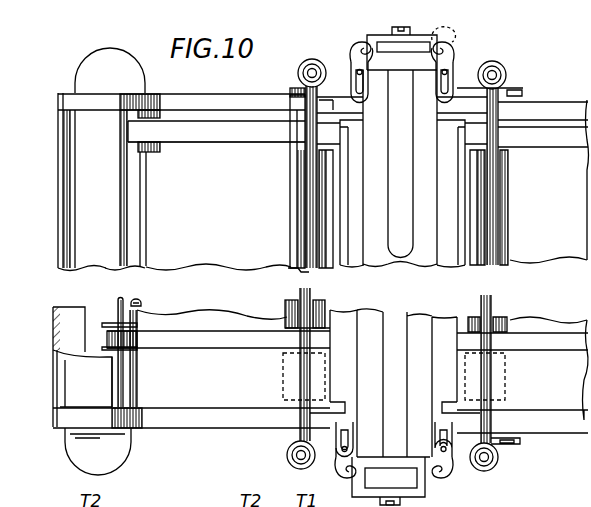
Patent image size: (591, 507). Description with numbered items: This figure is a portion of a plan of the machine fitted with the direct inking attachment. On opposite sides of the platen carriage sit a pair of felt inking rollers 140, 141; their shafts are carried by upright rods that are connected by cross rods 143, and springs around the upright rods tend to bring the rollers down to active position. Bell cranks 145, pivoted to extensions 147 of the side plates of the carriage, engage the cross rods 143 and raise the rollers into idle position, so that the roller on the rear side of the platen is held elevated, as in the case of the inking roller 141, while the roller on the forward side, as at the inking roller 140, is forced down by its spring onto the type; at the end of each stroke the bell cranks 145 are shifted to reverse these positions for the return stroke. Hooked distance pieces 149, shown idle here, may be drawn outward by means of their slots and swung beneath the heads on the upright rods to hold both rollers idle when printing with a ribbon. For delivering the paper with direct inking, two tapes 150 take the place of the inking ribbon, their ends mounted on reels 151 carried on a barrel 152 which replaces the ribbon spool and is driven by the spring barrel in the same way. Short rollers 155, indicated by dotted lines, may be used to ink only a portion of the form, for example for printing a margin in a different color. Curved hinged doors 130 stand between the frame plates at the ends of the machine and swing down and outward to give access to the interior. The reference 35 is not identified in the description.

The curved hinged door 130 is at (88, 383).
The felt inking roller 140 is at (510, 190).
The felt inking roller 141 is at (297, 206).
The cross rod 143 is at (298, 175).
The bell crank 145 is at (506, 440).
The extension of side plate 147 is at (452, 62).
The hooked distance piece 149 is at (352, 45).
The tape 150 is at (217, 134).
The reel 151 is at (113, 325).
The barrel 152 is at (141, 304).
The short roller 155 is at (290, 376).
The tab 35 is at (400, 499).